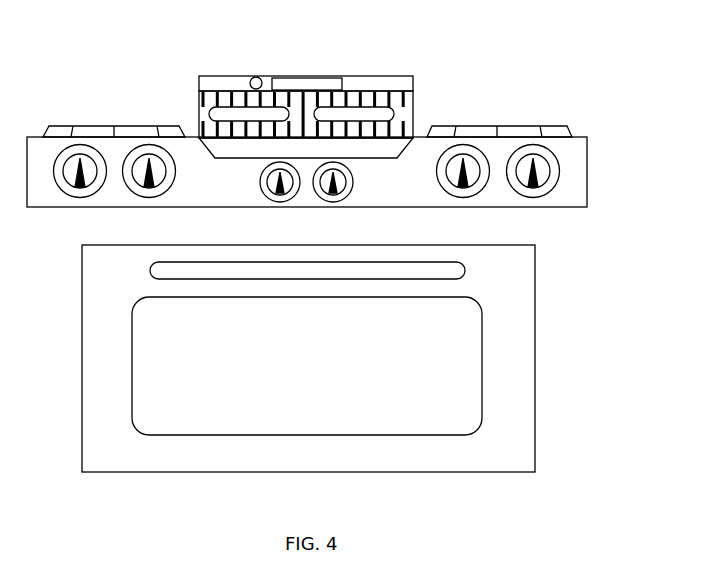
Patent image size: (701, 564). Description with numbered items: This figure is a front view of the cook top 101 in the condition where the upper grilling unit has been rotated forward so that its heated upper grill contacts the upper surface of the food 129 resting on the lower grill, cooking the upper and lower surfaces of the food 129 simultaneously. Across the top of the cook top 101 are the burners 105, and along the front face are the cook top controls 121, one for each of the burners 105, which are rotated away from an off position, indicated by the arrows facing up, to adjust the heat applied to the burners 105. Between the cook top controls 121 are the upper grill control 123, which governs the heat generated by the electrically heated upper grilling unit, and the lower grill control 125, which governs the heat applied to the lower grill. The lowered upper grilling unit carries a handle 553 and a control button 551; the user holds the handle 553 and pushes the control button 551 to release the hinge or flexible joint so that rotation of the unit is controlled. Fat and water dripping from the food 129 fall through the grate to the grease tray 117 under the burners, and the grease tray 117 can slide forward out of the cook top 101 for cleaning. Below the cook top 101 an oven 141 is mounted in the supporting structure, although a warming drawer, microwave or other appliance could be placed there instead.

The cook top 101 is at (427, 55).
The burners 105 is at (100, 132).
The grease tray 117 is at (385, 160).
The cook top controls 121 is at (72, 195).
The upper grill control 123 is at (277, 190).
The lower grill control 125 is at (343, 190).
The food 129 is at (205, 112).
The oven 141 is at (517, 402).
The control button 551 is at (258, 76).
The handle 553 is at (334, 80).